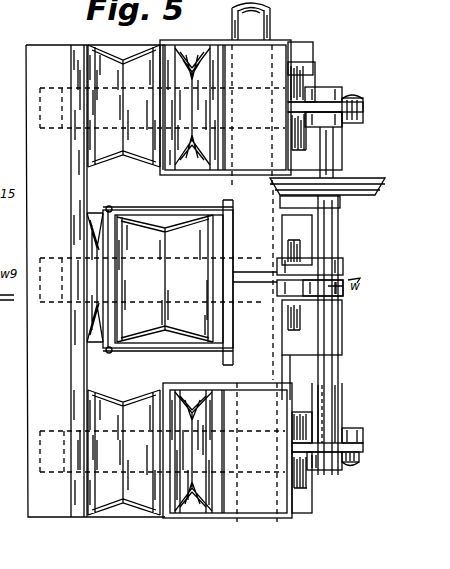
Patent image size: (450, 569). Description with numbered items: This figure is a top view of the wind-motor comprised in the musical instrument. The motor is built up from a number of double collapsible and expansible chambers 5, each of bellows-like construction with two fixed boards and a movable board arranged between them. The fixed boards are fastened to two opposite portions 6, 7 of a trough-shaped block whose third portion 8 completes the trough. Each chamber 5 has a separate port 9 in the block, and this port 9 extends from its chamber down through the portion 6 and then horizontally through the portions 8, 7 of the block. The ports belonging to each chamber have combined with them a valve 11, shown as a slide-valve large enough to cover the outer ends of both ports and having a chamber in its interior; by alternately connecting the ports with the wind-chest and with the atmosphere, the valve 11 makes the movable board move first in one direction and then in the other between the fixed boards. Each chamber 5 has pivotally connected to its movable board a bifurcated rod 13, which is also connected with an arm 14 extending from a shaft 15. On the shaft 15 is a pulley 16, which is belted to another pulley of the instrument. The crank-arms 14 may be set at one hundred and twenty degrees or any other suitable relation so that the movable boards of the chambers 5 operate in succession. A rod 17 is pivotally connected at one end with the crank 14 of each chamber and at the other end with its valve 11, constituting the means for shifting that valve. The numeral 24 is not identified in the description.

The double collapsible and expansible chamber 5 is at (150, 280).
The portion of trough-shaped block 6 is at (95, 281).
The portion of trough-shaped block 7 is at (250, 285).
The portion of trough-shaped block 8 is at (214, 120).
The port 9 is at (40, 107).
The valve 11 is at (305, 80).
The bifurcated rod 13 is at (212, 40).
The arm 14 is at (342, 120).
The shaft 15 is at (338, 238).
The pulley 16 is at (355, 186).
The rod 17 is at (358, 110).
The shaft end 24 is at (350, 430).